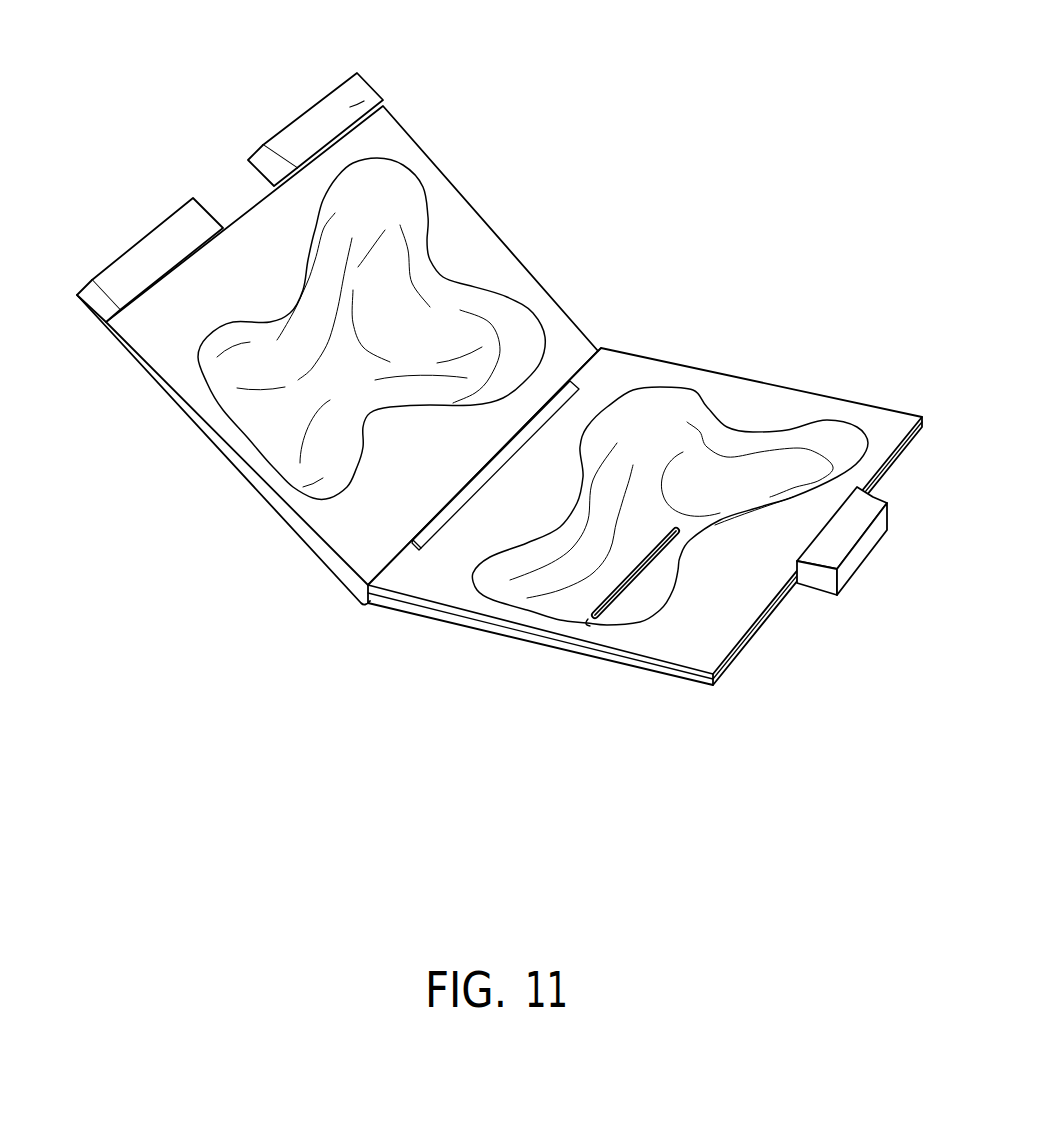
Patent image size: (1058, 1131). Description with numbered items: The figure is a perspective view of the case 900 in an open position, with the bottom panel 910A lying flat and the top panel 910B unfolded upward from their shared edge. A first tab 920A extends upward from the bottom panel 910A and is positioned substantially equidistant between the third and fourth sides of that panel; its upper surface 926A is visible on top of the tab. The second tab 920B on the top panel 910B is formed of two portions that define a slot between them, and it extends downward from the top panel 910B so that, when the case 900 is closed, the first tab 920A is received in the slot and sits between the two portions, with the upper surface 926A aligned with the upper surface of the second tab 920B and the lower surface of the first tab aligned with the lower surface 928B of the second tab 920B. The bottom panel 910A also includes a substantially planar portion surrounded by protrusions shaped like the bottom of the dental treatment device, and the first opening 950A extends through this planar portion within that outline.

The case 900 is at (501, 347).
The bottom panel 910A is at (750, 612).
The top panel 910B is at (413, 516).
The first tab 920A is at (860, 555).
The second tab 920B is at (293, 118).
The upper surface of the first tab 926A is at (857, 517).
The lower surface of the second tab 928B is at (353, 103).
The first opening 950A is at (595, 615).